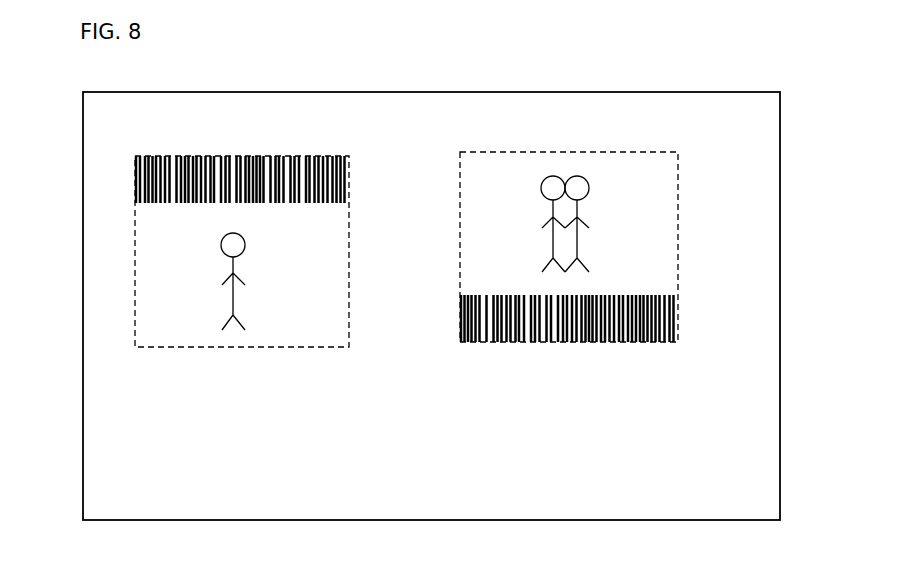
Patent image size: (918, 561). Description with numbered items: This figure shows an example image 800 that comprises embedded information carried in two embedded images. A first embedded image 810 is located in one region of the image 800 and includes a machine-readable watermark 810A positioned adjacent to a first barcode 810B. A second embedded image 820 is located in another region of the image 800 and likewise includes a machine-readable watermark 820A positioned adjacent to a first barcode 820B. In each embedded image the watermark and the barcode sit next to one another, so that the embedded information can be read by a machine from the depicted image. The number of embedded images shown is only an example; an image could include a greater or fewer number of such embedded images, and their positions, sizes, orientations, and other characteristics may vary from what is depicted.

The example image 800 is at (431, 306).
The first embedded image 810 is at (135, 252).
The machine-readable watermark 810A is at (256, 156).
The first barcode 810B is at (253, 330).
The second embedded image 820 is at (678, 247).
The machine-readable watermark 820A is at (618, 342).
The first barcode 820B is at (618, 165).